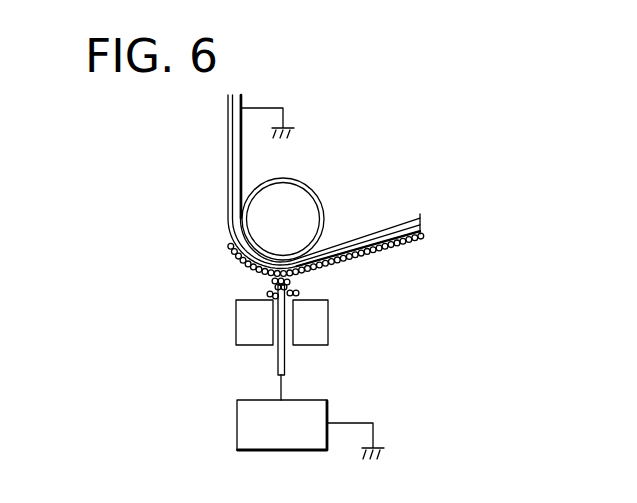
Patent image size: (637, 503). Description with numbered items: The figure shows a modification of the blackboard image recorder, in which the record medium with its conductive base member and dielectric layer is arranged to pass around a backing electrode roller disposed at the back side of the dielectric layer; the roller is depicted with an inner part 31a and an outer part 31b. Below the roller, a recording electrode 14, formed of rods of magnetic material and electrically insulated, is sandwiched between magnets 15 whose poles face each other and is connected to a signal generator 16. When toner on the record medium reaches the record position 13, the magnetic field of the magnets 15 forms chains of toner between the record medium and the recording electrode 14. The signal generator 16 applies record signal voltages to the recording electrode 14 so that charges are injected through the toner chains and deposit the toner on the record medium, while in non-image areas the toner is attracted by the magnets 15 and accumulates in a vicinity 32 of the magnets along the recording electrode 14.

The drum core 31a is at (280, 199).
The drum surface layer 31b is at (322, 207).
The record position 13 is at (299, 289).
The vicinity of the magnets 32 is at (268, 295).
The magnets 15 is at (330, 313).
The recording electrode 14 is at (285, 364).
The signal generator 16 is at (237, 423).